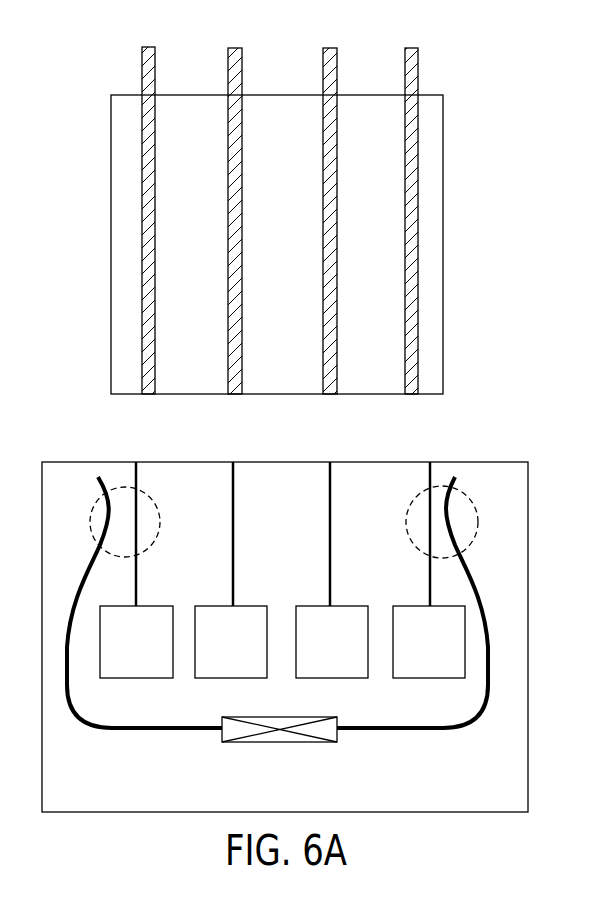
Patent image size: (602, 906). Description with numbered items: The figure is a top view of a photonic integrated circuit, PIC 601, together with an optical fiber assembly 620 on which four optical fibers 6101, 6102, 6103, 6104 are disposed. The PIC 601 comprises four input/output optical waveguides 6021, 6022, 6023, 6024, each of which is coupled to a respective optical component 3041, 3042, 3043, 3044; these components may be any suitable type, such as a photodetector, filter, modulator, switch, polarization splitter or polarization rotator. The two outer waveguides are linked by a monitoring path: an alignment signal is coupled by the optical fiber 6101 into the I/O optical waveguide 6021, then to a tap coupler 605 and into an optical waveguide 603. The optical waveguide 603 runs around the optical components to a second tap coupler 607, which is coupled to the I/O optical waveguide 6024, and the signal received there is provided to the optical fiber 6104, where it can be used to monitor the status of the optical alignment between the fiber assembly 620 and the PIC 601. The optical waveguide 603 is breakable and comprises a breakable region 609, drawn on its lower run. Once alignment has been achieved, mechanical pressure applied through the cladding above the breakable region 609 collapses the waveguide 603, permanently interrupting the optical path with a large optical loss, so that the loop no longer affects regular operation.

The optical fiber 6101 is at (142, 50).
The optical fiber 6102 is at (228, 48).
The optical fiber 6103 is at (323, 47).
The optical fiber 6104 is at (405, 48).
The optical fiber assembly 620 is at (443, 190).
The PIC 601 is at (528, 765).
The optical waveguide 6021 is at (150, 448).
The optical waveguide 6022 is at (234, 465).
The optical waveguide 6023 is at (331, 465).
The optical waveguide 6024 is at (431, 465).
The optical component 3041 is at (137, 678).
The optical component 3042 is at (232, 678).
The optical component 3043 is at (335, 678).
The optical component 3044 is at (436, 678).
The tap coupler 605 is at (100, 498).
The tap coupler 607 is at (478, 532).
The optical waveguide 603 is at (150, 731).
The breakable region 609 is at (278, 742).